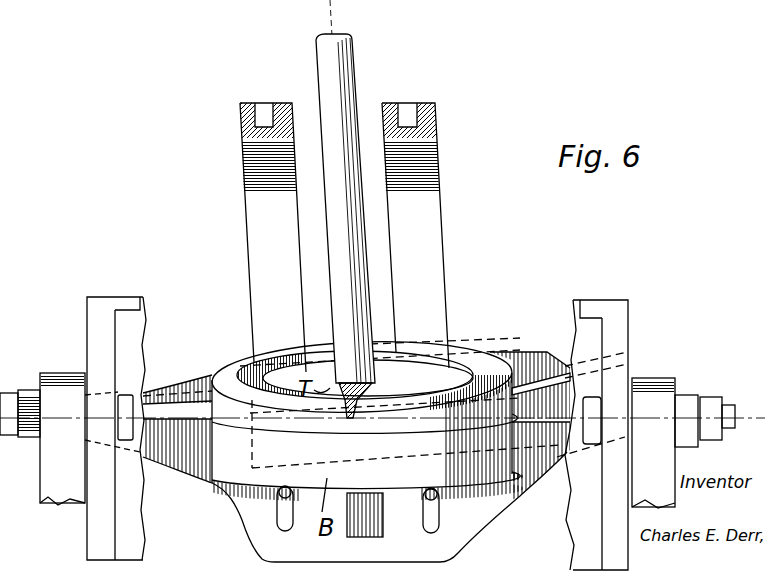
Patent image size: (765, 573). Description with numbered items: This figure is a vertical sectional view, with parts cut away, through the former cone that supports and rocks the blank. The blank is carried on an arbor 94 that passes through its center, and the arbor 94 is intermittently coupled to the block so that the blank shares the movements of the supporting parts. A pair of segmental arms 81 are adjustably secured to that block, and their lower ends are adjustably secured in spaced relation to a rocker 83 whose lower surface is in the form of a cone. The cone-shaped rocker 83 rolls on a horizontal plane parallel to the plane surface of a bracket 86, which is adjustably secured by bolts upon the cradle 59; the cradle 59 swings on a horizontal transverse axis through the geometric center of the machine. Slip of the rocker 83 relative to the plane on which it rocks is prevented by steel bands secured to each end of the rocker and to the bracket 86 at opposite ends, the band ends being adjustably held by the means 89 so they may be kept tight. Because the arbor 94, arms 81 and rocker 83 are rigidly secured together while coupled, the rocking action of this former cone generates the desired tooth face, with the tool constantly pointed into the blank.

The cradle 59 is at (96, 331).
The segmental arms 81 is at (258, 238).
The rocker 83 is at (503, 353).
The bracket 86 is at (460, 520).
The adjustable band holding means 89 is at (706, 396).
The arbor 94 is at (345, 86).